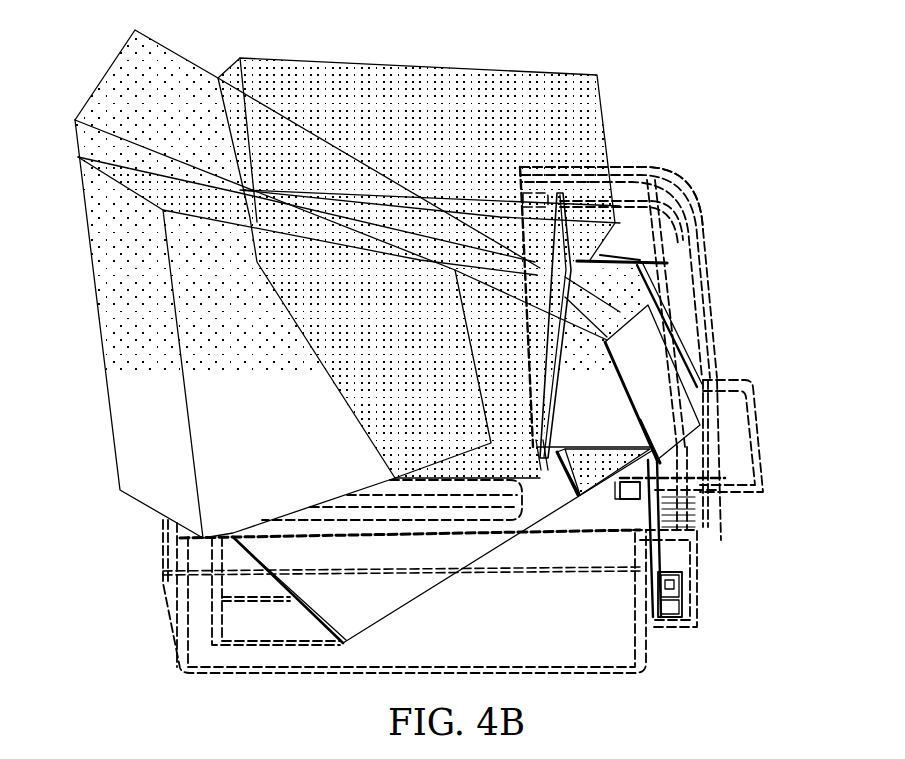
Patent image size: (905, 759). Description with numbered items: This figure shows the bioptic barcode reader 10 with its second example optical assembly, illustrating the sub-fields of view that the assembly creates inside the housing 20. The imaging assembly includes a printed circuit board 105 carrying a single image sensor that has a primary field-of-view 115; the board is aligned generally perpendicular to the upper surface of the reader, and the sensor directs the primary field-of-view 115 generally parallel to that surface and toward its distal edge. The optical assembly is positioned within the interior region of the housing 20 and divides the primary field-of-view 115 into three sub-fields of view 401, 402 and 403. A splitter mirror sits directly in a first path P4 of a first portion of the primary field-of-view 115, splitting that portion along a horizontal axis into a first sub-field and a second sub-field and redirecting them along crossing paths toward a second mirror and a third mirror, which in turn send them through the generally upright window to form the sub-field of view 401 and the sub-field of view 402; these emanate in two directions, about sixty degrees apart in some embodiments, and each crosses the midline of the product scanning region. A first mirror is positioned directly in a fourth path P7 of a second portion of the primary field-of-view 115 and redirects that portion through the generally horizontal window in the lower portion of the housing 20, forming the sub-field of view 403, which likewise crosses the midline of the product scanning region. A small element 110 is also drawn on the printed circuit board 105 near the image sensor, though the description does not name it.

The bioptic barcode reader 10 is at (742, 184).
The housing 20 is at (706, 218).
The printed circuit board 105 is at (660, 543).
The light source 110 is at (632, 493).
The primary field-of-view 115 is at (585, 505).
The sub-field of view 401 is at (125, 93).
The sub-field of view 402 is at (108, 250).
The sub-field of view 403 is at (306, 82).
The first path P4 is at (573, 495).
The fourth path P7 is at (400, 612).